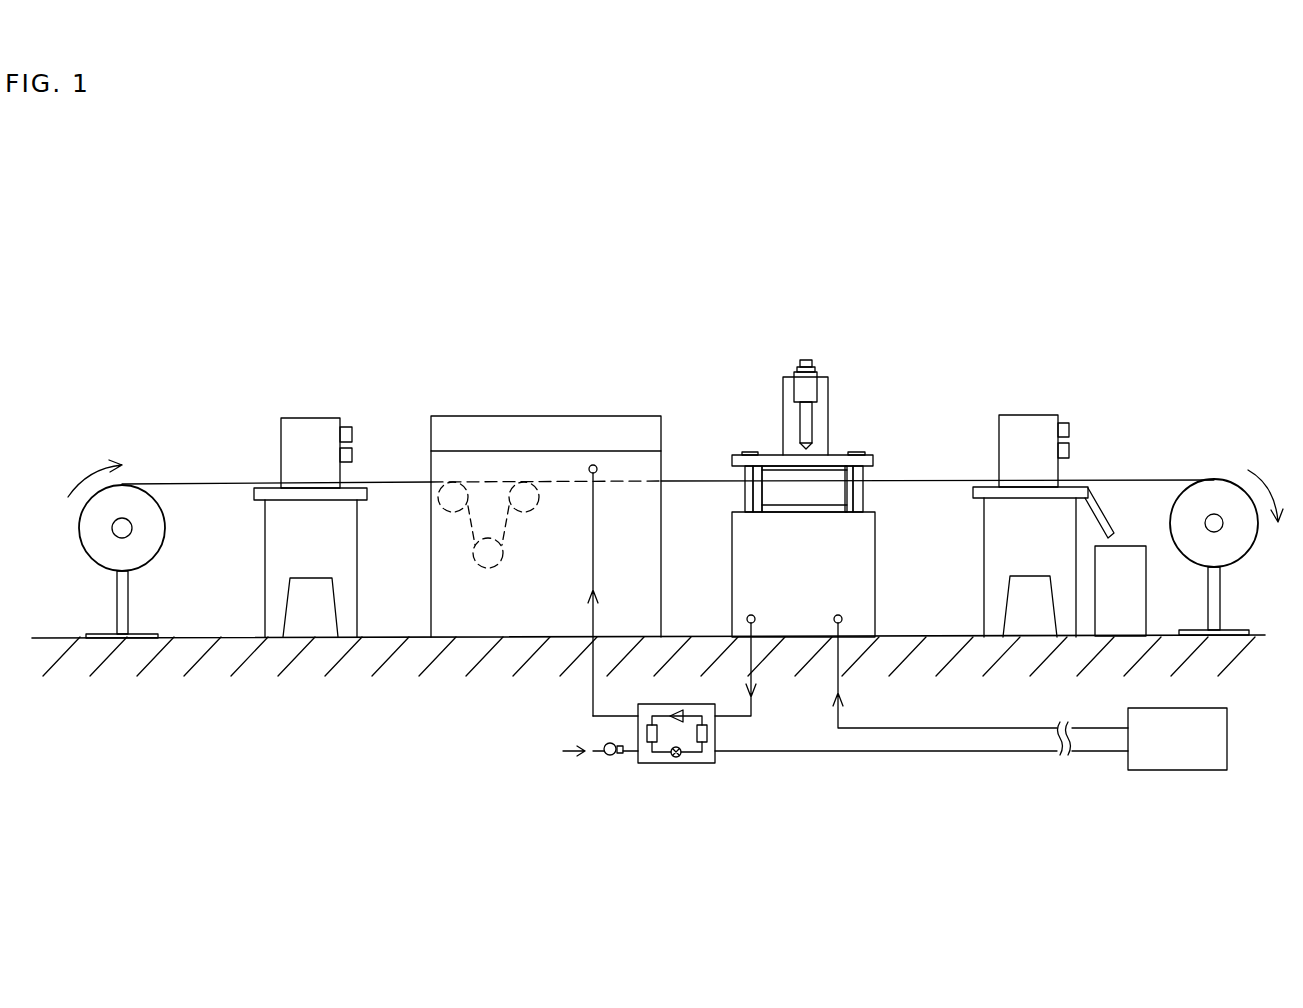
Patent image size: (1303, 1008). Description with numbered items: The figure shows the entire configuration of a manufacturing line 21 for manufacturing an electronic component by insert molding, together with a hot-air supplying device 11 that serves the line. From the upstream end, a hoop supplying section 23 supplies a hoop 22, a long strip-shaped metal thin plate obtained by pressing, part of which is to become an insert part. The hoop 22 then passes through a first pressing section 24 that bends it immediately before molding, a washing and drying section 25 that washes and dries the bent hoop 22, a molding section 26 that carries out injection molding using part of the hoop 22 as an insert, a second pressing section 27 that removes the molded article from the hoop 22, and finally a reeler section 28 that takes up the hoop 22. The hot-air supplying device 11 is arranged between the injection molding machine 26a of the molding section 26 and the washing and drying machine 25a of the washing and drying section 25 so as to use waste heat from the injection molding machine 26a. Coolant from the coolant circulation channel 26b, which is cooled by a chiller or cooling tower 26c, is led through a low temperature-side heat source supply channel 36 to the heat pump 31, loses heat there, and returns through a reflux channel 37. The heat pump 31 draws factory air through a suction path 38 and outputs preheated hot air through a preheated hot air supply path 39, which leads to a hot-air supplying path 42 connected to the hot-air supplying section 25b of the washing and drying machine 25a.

The hot-air supplying device 11 is at (845, 747).
The manufacturing line 21 is at (1002, 209).
The hoop 22 is at (185, 482).
The hoop supplying section 23 is at (140, 384).
The first pressing section 24 is at (306, 361).
The washing and drying section 25 is at (555, 497).
The washing and drying machine 25a is at (615, 417).
The hot-air supplying section 25b is at (589, 468).
The molding section 26 is at (819, 462).
The injection molding machine 26a is at (828, 423).
The coolant circulation channel 26b is at (752, 645).
The chiller or cooling tower 26c is at (1183, 772).
The second pressing section 27 is at (1049, 358).
The reeler section 28 is at (1186, 414).
The heat pump 31 is at (667, 765).
The low temperature-side heat source supply channel 36 is at (735, 713).
The reflux channel 37 is at (921, 775).
The suction path 38 is at (630, 757).
The preheated hot air supply path 39 is at (615, 715).
The hot-air supplying path 42 is at (600, 525).